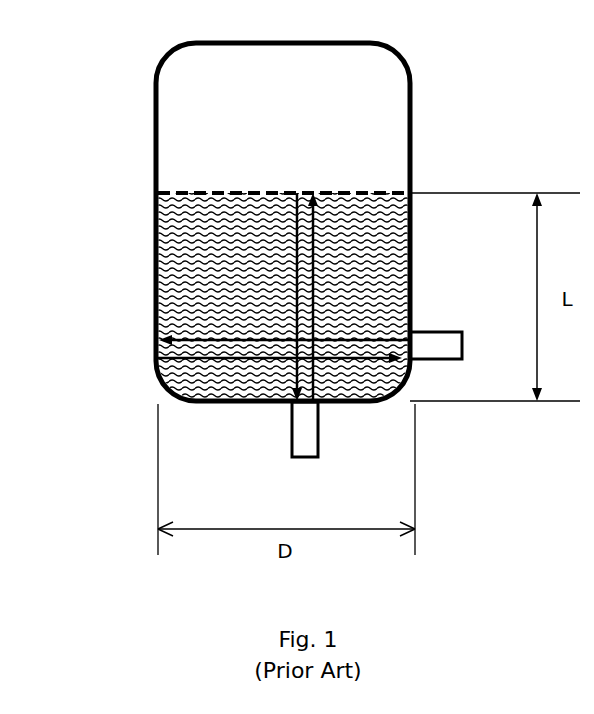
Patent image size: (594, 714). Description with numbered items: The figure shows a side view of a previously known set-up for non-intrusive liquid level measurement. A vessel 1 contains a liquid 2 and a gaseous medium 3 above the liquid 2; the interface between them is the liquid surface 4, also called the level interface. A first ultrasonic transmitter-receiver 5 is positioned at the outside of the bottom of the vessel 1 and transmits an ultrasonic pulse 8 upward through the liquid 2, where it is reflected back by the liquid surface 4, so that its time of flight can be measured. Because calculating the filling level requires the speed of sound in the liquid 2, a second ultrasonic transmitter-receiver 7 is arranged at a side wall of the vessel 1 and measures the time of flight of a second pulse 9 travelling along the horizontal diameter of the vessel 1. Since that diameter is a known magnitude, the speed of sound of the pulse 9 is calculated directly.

The vessel 1 is at (154, 164).
The liquid 2 is at (178, 281).
The gaseous medium 3 is at (378, 115).
The liquid surface 4 is at (370, 193).
The first ultrasonic transmitter-receiver 5 is at (303, 458).
The second ultrasonic transmitter-receiver 7 is at (443, 359).
The ultrasonic pulse 8 is at (297, 265).
The second pulse 9 is at (258, 340).